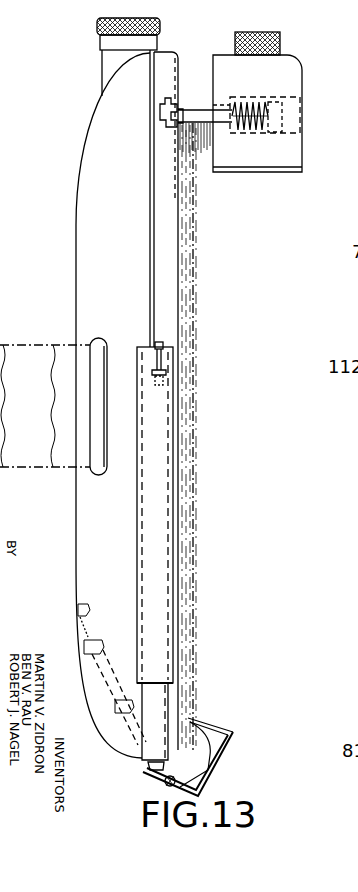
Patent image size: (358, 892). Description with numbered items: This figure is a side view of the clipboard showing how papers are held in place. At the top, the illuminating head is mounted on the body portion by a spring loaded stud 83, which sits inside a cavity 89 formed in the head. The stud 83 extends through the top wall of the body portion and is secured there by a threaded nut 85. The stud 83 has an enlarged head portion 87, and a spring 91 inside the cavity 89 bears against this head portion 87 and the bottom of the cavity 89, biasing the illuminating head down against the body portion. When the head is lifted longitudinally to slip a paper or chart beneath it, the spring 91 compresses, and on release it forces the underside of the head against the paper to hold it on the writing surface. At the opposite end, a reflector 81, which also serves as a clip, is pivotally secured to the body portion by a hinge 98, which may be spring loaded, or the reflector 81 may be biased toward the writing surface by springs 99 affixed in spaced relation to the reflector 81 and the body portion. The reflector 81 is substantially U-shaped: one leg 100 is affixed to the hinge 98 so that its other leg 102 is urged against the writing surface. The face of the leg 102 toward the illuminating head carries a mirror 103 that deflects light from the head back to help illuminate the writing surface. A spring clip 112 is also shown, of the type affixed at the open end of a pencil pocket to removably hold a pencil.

The reflector 81 is at (216, 745).
The spring loaded stud 83 is at (225, 120).
The threaded nut 85 is at (171, 127).
The enlarged head portion 87 is at (278, 117).
The cavity 89 is at (297, 125).
The spring 91 is at (250, 107).
The hinge 98 is at (146, 763).
The spring 99 is at (106, 700).
The leg 100 is at (150, 771).
The leg 102 is at (220, 726).
The mirror 103 is at (232, 740).
The spring clip 112 is at (163, 366).